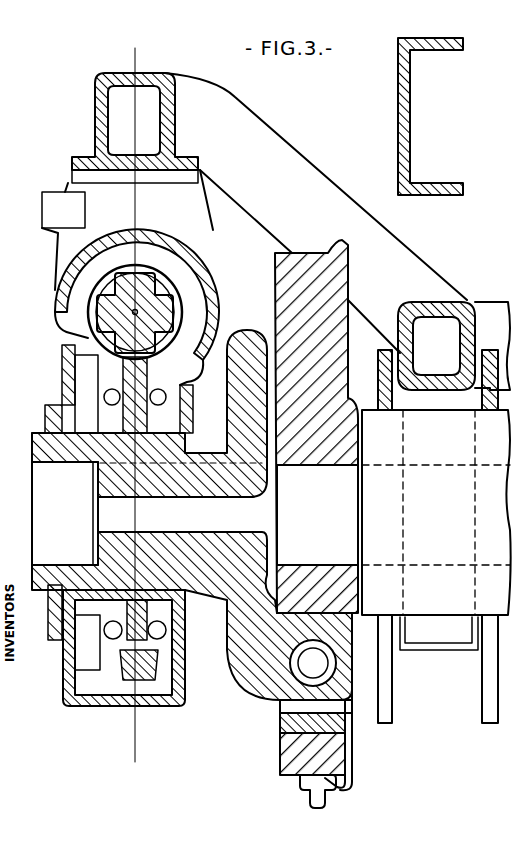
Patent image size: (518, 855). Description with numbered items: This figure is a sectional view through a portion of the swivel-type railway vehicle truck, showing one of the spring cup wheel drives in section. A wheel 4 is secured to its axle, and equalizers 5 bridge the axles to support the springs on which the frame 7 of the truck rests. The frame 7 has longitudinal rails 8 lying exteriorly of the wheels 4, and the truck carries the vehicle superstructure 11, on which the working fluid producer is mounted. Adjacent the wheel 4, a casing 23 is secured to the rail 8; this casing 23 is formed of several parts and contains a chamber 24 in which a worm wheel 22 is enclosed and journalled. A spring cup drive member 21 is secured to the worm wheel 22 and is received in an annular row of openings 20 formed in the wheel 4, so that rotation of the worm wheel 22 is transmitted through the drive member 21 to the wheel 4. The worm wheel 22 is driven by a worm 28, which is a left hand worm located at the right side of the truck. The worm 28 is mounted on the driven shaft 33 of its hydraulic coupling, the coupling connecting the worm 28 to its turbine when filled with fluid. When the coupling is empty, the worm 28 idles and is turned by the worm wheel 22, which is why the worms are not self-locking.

The wheels 4 is at (348, 290).
The equalizers 5 is at (488, 680).
The frame 7 is at (440, 302).
The longitudinal rails 8 is at (95, 118).
The vehicle superstructure 11 is at (405, 120).
The openings 20 is at (347, 706).
The spring cup drive member 21 is at (263, 687).
The worm wheel 22 is at (85, 374).
The casing 23 is at (58, 292).
The chamber 24 is at (112, 687).
The worm 28 is at (170, 296).
The driven shaft 33 is at (190, 300).